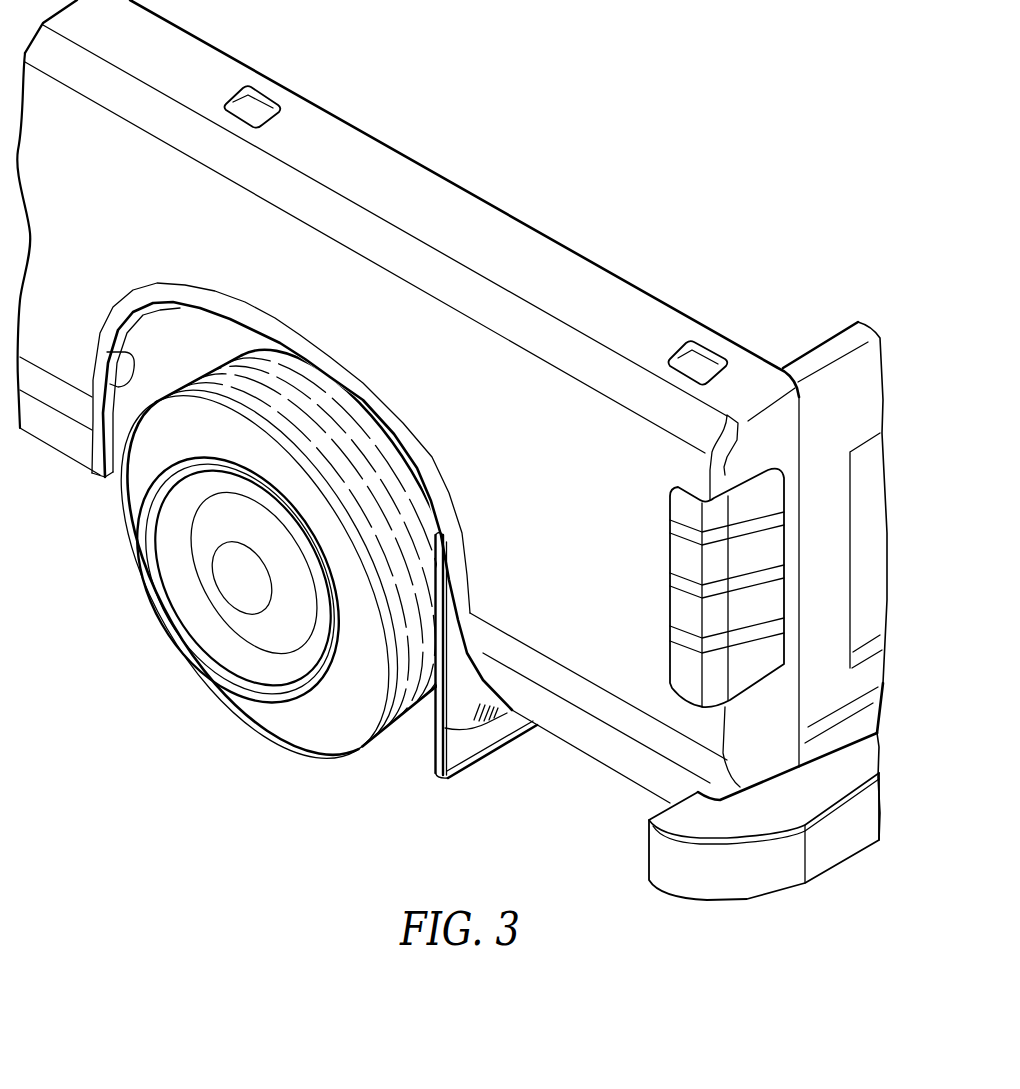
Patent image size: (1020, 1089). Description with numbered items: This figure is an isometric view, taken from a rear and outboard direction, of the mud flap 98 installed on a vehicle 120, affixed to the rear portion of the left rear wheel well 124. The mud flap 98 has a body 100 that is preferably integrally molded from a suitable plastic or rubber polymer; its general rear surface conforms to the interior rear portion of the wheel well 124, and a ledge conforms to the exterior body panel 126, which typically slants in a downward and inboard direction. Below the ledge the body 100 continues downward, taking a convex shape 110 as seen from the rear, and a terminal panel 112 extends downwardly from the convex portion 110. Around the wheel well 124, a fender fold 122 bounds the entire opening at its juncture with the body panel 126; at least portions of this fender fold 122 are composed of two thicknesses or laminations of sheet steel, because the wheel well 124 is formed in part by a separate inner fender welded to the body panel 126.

The mud flap 98 is at (468, 702).
The body 100 is at (423, 753).
The convex shape 110 is at (458, 694).
The terminal panel 112 is at (480, 748).
The vehicle 120 is at (421, 154).
The fender fold 122 is at (103, 352).
The wheel well 124 is at (198, 322).
The body panel 126 is at (342, 312).